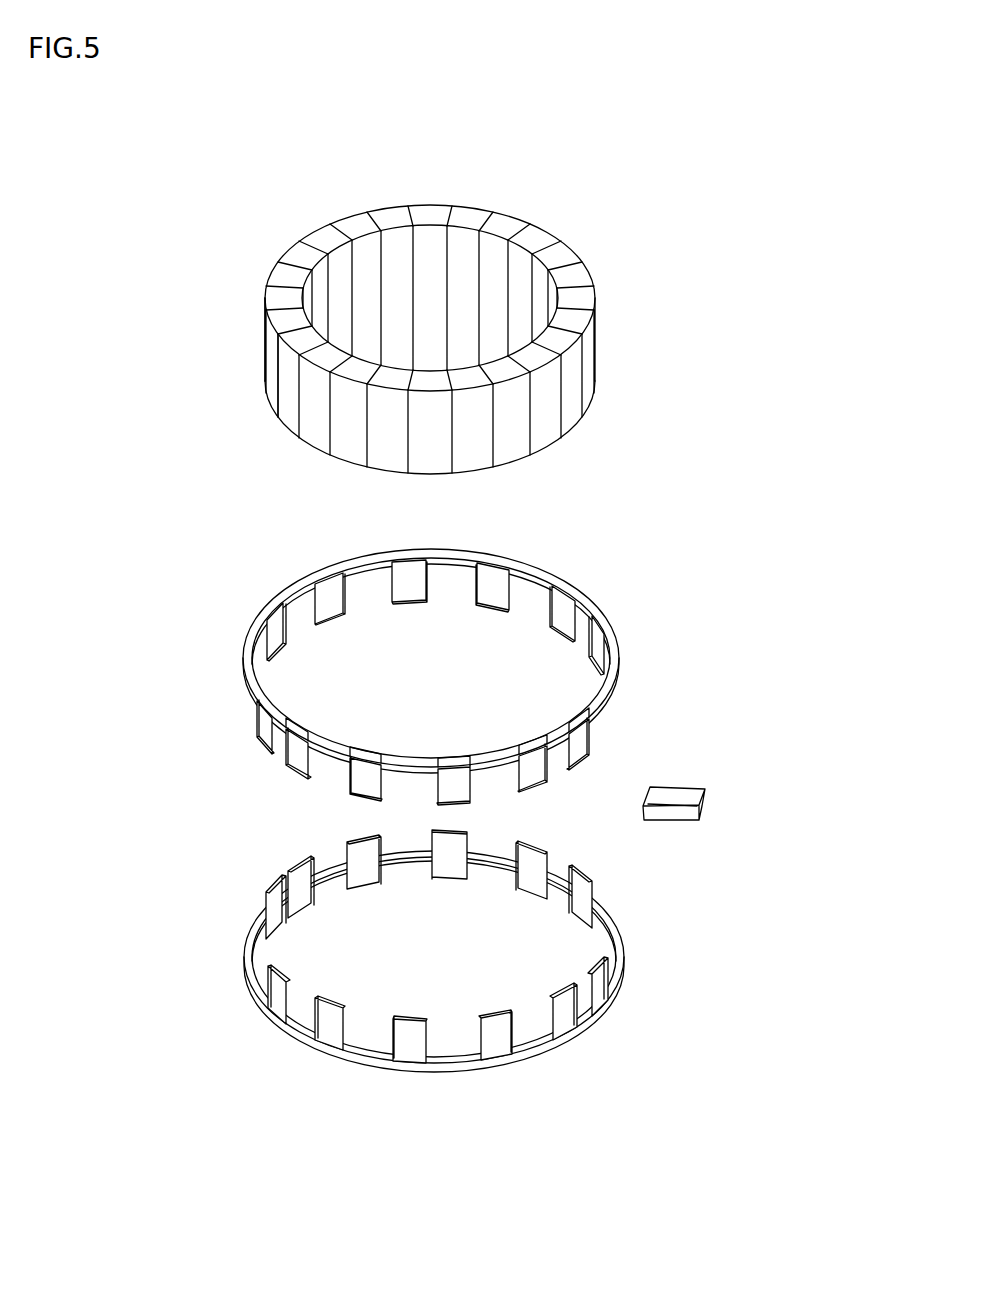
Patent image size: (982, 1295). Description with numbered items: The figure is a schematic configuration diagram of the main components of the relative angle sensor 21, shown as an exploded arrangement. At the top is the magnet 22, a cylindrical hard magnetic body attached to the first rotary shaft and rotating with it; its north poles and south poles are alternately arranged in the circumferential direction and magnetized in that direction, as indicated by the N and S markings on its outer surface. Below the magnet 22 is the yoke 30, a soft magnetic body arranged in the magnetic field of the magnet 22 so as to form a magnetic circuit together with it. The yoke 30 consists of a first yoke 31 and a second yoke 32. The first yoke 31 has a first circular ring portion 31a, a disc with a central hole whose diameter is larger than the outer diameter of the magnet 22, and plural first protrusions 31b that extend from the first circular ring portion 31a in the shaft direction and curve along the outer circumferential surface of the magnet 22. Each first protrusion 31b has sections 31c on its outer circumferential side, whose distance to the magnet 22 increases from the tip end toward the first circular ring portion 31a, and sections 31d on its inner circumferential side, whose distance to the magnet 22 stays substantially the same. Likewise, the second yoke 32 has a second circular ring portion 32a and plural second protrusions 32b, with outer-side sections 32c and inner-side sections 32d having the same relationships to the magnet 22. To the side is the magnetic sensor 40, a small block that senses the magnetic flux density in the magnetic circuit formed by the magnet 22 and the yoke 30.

The relative angle sensor 21 is at (463, 309).
The magnet 22 is at (266, 362).
The yoke 30 is at (147, 650).
The first yoke 31 is at (423, 698).
The first circular ring portion 31a is at (469, 698).
The first protrusions 31b is at (543, 776).
The sections on the outer circumferential side of the first protrusions 31c is at (577, 617).
The sections on the inner circumferential side of the first protrusions 31d is at (490, 573).
The second yoke 32 is at (406, 962).
The second circular ring portion 32a is at (427, 962).
The second protrusions 32b is at (300, 870).
The sections on the outer circumferential side of the second protrusions 32c is at (287, 1037).
The sections on the inner circumferential side of the second protrusions 32d is at (525, 883).
The magnetic sensor 40 is at (672, 822).